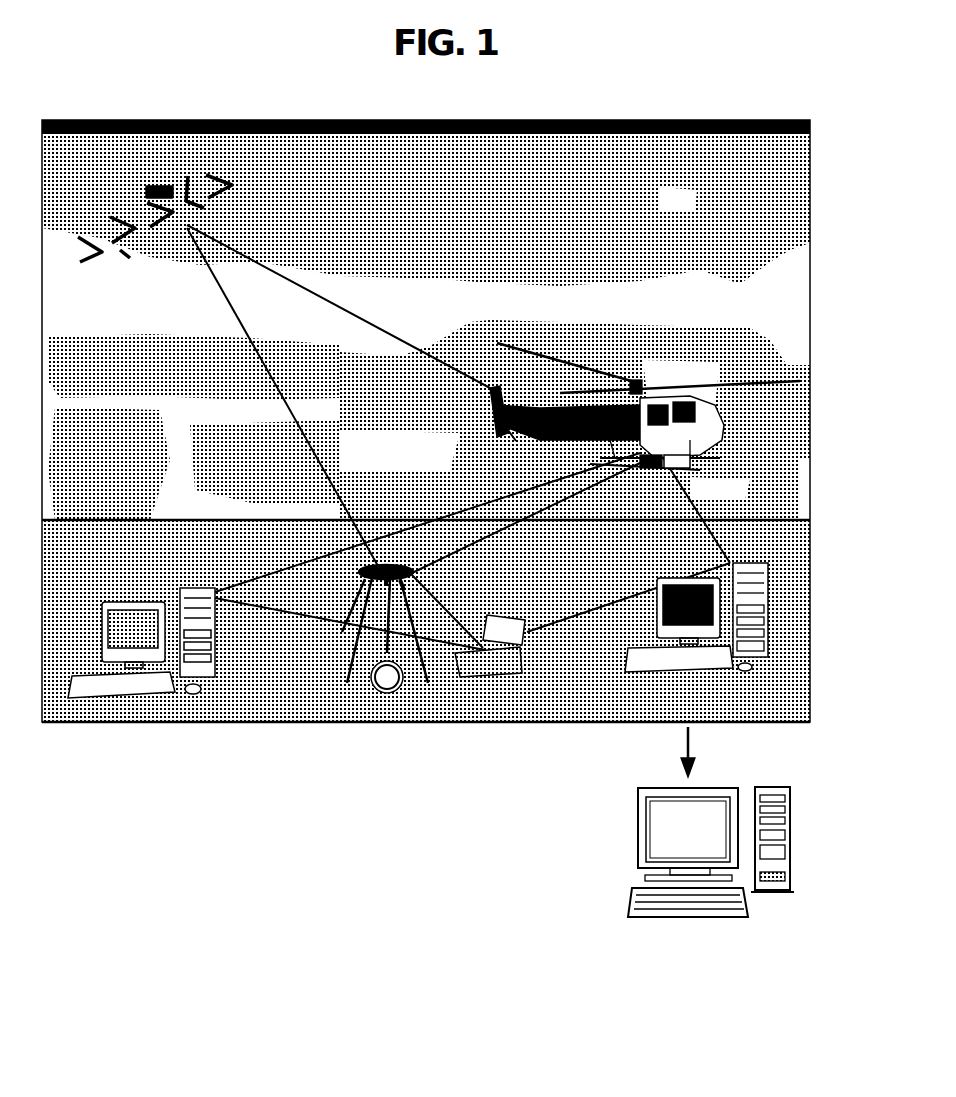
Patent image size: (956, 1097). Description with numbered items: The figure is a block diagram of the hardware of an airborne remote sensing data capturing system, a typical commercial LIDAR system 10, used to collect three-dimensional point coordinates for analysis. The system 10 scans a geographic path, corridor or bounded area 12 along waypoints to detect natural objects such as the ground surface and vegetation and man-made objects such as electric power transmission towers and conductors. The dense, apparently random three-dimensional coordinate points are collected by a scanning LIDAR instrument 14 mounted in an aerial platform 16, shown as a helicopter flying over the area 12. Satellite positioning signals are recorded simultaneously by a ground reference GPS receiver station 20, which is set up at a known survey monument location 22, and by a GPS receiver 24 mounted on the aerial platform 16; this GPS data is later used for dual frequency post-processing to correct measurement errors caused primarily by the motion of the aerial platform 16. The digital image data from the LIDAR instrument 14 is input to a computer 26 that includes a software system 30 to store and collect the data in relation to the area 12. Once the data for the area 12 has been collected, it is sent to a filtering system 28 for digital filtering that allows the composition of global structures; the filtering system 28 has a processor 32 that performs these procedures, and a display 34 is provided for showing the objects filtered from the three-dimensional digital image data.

The LIDAR system 10 is at (562, 182).
The geographic path/corridor or area 12 is at (400, 612).
The scanning LIDAR instrument 14 is at (685, 462).
The aerial platform 16 is at (708, 418).
The ground reference GPS receiver station 20 is at (388, 688).
The known survey monument location 22 is at (403, 610).
The GPS receiver 24 is at (635, 478).
The computer 26 is at (775, 582).
The filtering system 28 is at (767, 625).
The software system 30 is at (763, 627).
The processor 32 is at (790, 835).
The display 34 is at (650, 832).